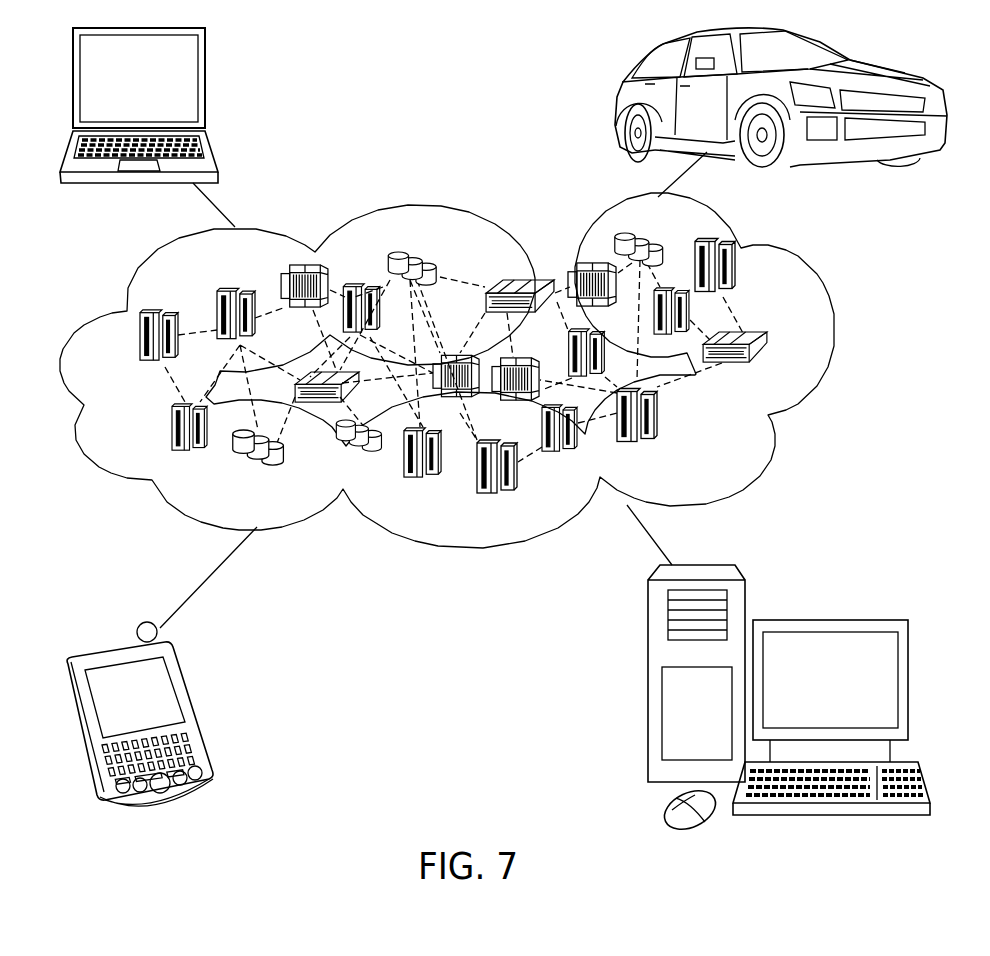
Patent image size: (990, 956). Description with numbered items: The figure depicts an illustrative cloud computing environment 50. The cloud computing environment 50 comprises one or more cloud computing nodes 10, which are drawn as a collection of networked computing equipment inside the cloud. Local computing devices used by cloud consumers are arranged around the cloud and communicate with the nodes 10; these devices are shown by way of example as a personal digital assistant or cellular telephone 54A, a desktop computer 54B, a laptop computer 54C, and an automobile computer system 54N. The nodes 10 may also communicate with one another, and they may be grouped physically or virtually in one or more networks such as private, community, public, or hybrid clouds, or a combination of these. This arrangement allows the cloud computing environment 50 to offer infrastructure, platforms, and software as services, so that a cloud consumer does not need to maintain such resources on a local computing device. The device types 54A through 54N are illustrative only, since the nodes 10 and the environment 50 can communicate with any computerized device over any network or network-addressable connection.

The cloud computing node 10 is at (780, 377).
The cloud computing environment 50 is at (832, 348).
The personal digital assistant or cellular telephone 54A is at (194, 709).
The desktop computer 54B is at (828, 620).
The laptop computer 54C is at (205, 85).
The automobile computer system 54N is at (620, 101).